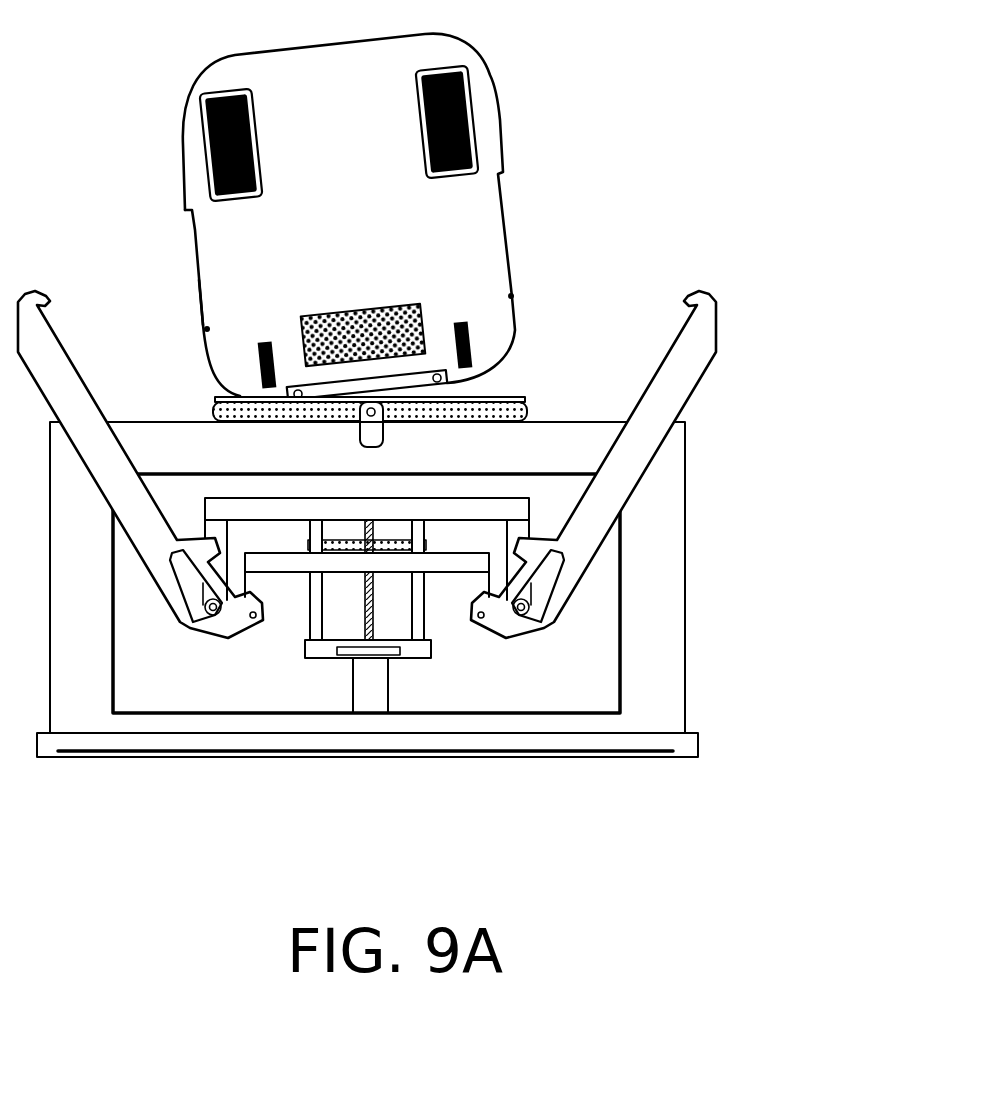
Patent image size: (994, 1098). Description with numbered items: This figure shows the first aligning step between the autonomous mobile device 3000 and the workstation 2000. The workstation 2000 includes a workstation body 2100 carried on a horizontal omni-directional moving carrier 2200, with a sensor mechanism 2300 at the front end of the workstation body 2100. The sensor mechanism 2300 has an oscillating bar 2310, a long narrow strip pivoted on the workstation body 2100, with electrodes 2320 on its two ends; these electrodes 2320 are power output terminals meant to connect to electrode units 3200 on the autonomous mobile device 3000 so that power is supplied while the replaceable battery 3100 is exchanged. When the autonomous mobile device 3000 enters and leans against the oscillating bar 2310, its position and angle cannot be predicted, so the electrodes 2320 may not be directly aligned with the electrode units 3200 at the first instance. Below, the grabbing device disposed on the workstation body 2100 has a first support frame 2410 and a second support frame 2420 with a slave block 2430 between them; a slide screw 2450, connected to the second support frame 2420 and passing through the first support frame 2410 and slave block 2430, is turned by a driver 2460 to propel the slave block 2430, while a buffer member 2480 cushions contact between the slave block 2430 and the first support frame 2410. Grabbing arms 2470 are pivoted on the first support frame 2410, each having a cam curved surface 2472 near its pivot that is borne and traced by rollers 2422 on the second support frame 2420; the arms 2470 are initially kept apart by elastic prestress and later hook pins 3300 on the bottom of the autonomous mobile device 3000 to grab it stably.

The workstation 2000 is at (727, 498).
The workstation body 2100 is at (620, 678).
The horizontal omni-directional moving carrier 2200 is at (698, 740).
The sensor mechanism 2300 is at (527, 413).
The oscillating bar 2310 is at (213, 413).
The electrodes 2320 is at (217, 407).
The first support frame 2410 is at (277, 565).
The second support frame 2420 is at (238, 513).
The rollers 2422 is at (524, 603).
The slave block 2430 is at (430, 548).
The slide screw 2450 is at (363, 655).
The driver 2460 is at (375, 700).
The grabbing arms 2470 is at (693, 342).
The cam curved surface 2472 is at (558, 584).
The buffer member 2480 is at (437, 623).
The autonomous mobile device 3000 is at (490, 202).
The battery 3100 is at (400, 305).
The electrode units 3200 is at (447, 380).
The pins 3300 is at (200, 307).